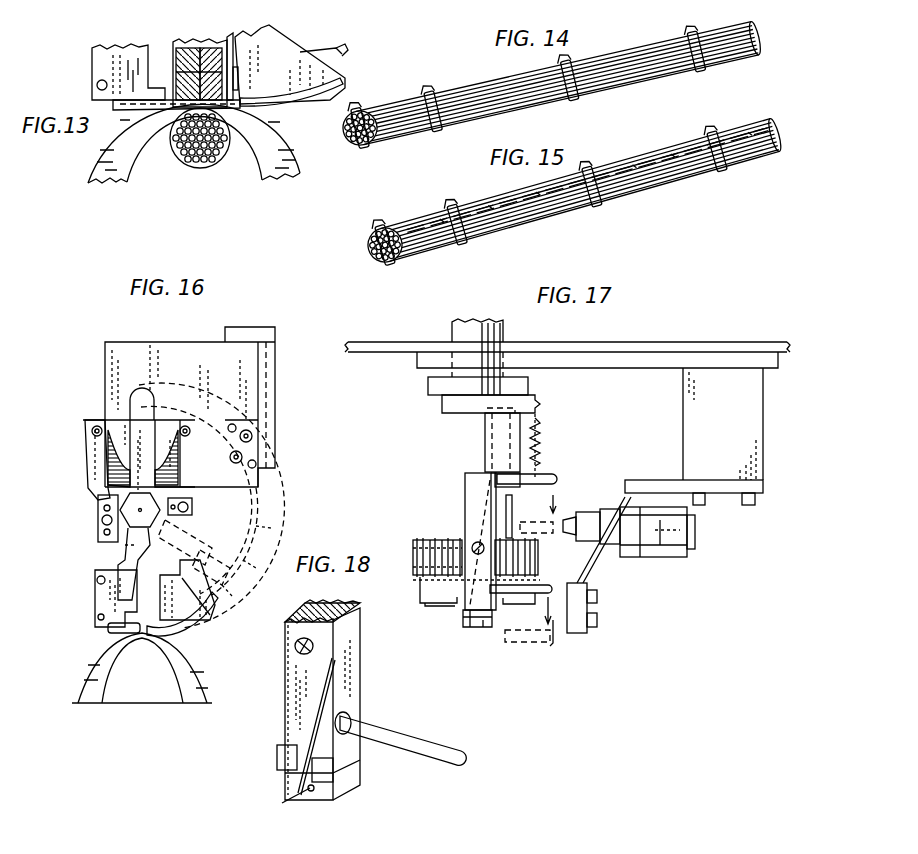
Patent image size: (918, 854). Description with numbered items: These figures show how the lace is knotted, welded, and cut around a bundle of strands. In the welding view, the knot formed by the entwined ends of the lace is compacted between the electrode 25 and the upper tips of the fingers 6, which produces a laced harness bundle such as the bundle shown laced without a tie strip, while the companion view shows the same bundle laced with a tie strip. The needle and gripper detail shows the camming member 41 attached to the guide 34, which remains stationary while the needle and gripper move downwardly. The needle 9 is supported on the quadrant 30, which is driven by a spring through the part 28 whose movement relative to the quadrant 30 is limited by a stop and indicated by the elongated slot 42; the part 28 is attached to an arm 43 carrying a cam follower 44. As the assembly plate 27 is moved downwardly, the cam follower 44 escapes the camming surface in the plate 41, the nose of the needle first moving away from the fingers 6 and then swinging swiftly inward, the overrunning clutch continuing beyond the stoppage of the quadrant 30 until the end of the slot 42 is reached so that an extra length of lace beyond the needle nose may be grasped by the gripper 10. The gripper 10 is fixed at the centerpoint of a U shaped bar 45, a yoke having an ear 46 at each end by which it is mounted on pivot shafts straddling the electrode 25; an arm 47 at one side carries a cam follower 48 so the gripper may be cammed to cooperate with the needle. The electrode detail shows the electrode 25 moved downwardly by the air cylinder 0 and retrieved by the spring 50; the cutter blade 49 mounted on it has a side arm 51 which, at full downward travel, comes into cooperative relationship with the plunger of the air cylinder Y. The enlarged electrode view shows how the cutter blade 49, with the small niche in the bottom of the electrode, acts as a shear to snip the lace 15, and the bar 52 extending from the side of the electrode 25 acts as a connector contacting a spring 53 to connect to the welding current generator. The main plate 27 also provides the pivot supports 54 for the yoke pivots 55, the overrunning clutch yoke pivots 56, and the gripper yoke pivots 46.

In FIG. 13, the fingers 6 is at (95, 157).
In FIG. 16, the fingers 6 is at (92, 678).
In FIG. 13, the needle 9 is at (290, 108).
In FIG. 16, the needle 9 is at (183, 624).
In FIG. 13, the gripper 10 is at (113, 108).
In FIG. 16, the gripper 10 is at (108, 628).
In FIG. 18, the lace 15 is at (293, 800).
In FIG. 13, the electrode 25 is at (203, 43).
In FIG. 17, the electrode 25 is at (490, 605).
In FIG. 18, the electrode 25 is at (355, 686).
In FIG. 16, the assembly plate 27 is at (168, 352).
In FIG. 16, the part 28 is at (205, 527).
In FIG. 16, the quadrant 30 is at (228, 548).
In FIG. 16, the guide 34 is at (276, 405).
In FIG. 16, the camming member 41 is at (84, 462).
In FIG. 16, the elongated slot 42 is at (262, 521).
In FIG. 16, the arm 43 is at (185, 468).
In FIG. 16, the cam follower 44 is at (187, 427).
In FIG. 16, the U shaped bar 45 is at (98, 558).
In FIG. 17, the U shaped bar 45 is at (433, 605).
In FIG. 16, the ear 46 is at (125, 532).
In FIG. 17, the ear 46 is at (420, 587).
In FIG. 16, the arm 47 is at (100, 496).
In FIG. 16, the cam follower 48 is at (95, 422).
In FIG. 13, the cutter blade 49 is at (230, 40).
In FIG. 17, the cutter blade 49 is at (477, 497).
In FIG. 18, the cutter blade 49 is at (288, 677).
In FIG. 17, the spring 50 is at (541, 435).
In FIG. 17, the side arm 51 is at (548, 476).
In FIG. 17, the bar 52 is at (543, 584).
In FIG. 18, the bar 52 is at (407, 738).
In FIG. 17, the spring 53 is at (558, 630).
In FIG. 17, the pivot supports 54 is at (460, 536).
In FIG. 17, the yoke pivots 55 is at (448, 537).
In FIG. 17, the overrunning clutch yoke pivots 56 is at (435, 538).
In FIG. 17, the air cylinder 0 is at (487, 444).
In FIG. 17, the air cylinder Y is at (648, 558).